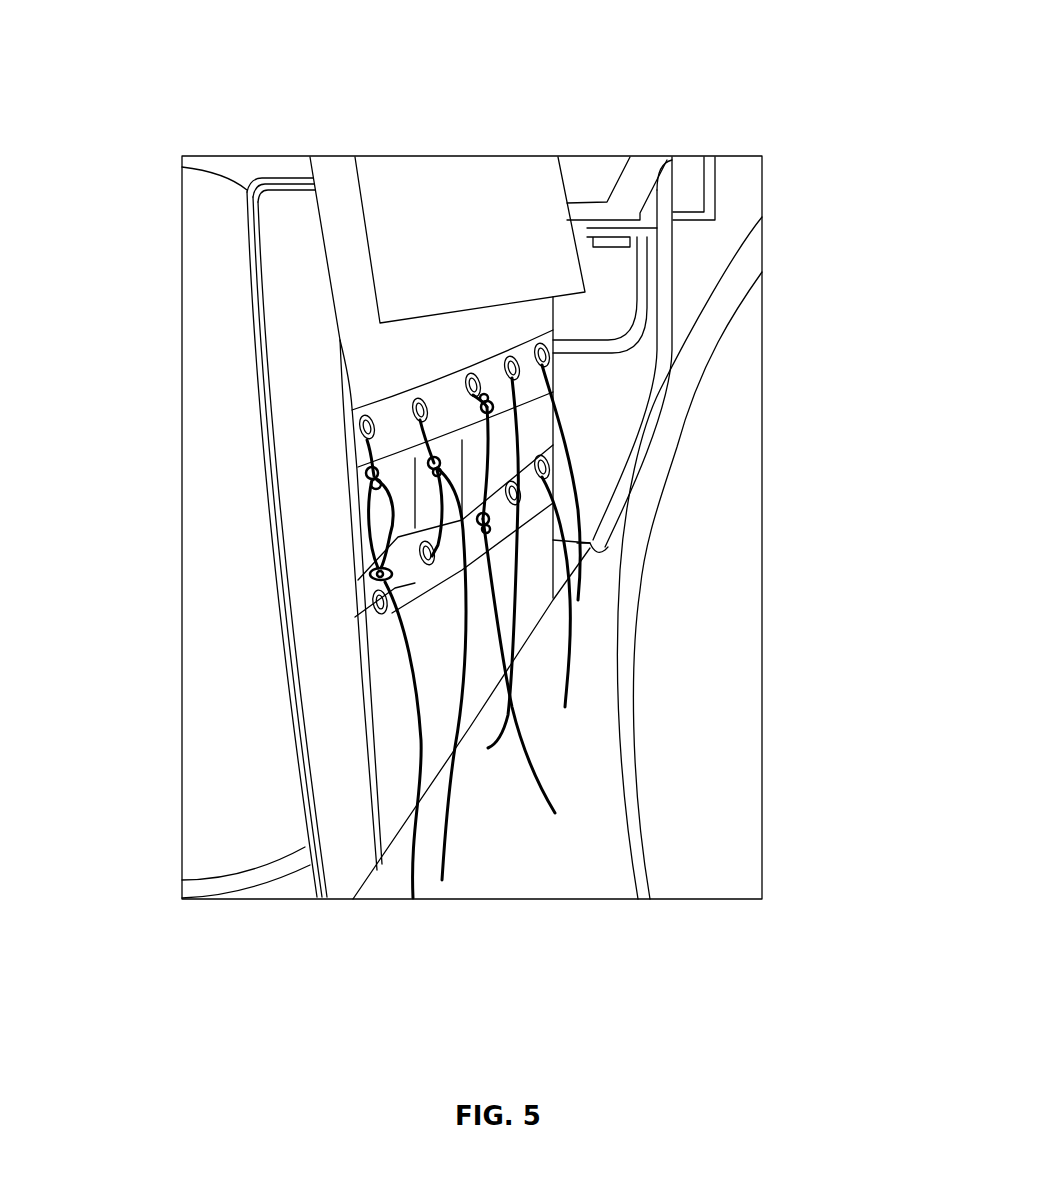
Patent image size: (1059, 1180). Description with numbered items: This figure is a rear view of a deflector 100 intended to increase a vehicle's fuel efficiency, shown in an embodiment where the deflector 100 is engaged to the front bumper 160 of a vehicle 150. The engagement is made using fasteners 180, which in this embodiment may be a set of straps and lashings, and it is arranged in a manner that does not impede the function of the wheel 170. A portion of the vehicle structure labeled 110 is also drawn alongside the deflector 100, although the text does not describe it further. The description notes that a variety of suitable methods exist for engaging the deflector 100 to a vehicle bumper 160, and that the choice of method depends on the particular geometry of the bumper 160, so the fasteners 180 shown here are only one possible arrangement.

The deflector 100 is at (231, 400).
The pillar trim 110 is at (233, 605).
The vehicle 150 is at (583, 172).
The front bumper 160 is at (322, 731).
The wheel 170 is at (698, 660).
The fasteners 180 is at (370, 492).